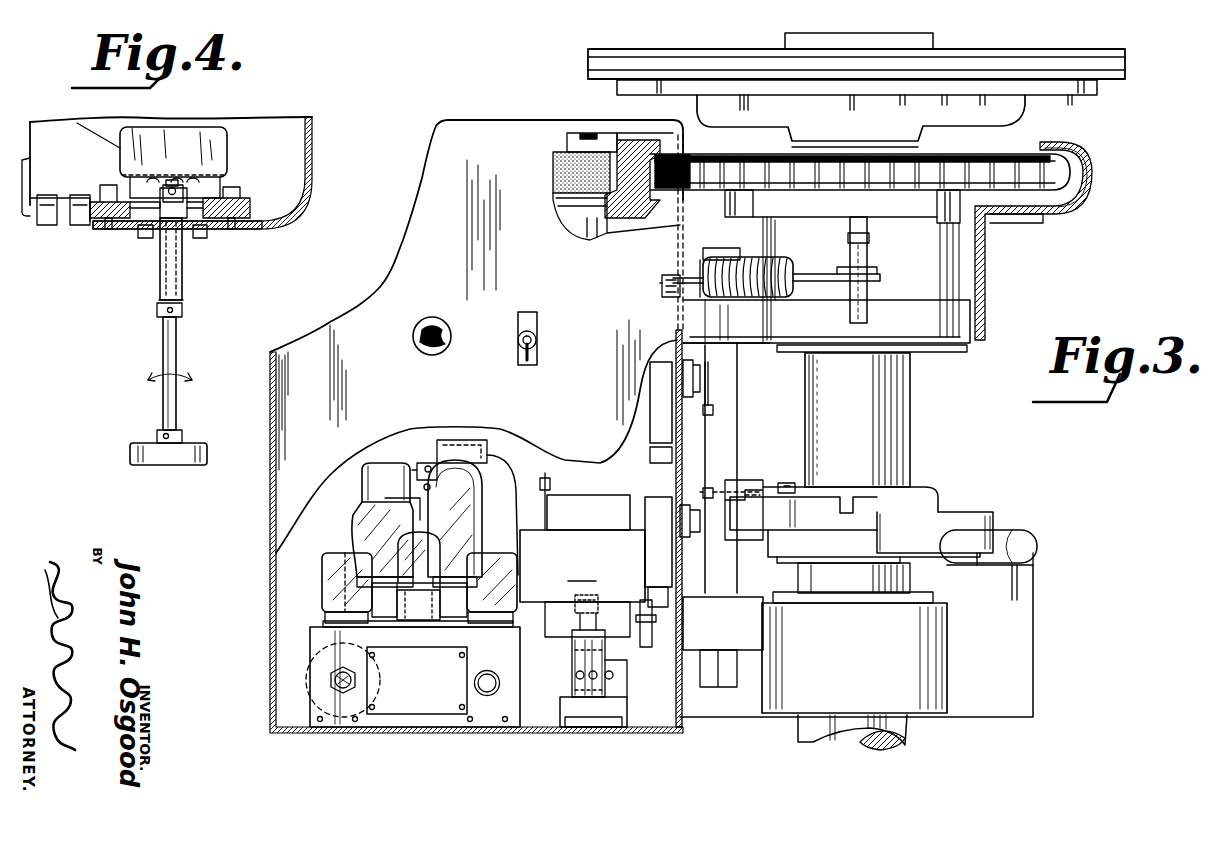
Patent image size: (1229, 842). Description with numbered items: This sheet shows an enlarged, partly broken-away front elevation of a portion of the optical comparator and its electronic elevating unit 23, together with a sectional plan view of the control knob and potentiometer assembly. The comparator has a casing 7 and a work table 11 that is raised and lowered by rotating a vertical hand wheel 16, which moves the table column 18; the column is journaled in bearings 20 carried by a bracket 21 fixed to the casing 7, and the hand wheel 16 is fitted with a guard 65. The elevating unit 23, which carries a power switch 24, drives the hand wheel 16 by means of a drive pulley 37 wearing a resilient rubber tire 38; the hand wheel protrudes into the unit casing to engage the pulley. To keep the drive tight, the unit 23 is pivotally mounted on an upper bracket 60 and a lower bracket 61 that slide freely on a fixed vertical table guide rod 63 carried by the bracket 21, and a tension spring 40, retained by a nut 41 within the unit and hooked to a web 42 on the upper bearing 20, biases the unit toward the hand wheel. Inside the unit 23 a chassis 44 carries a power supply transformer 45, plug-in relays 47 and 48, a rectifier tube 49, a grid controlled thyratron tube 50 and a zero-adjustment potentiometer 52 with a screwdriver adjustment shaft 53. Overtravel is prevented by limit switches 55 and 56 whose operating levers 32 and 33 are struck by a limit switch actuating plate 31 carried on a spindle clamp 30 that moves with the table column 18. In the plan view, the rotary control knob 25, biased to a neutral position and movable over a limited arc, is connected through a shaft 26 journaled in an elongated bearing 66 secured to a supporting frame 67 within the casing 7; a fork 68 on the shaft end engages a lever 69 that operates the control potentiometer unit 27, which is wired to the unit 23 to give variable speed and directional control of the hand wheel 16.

In FIG. 4, the casing 7 is at (312, 190).
In FIG. 3, the work table 11 is at (1062, 78).
In FIG. 3, the vertical hand wheel 16 is at (1032, 154).
In FIG. 3, the table column 18 is at (902, 448).
In FIG. 3, the bearings 20 is at (963, 296).
In FIG. 3, the bracket 21 is at (1023, 670).
In FIG. 3, the electronic elevating unit 23 is at (272, 525).
In FIG. 3, the power switch 24 is at (537, 343).
In FIG. 4, the rotary control knob 25 is at (130, 452).
In FIG. 4, the shaft 26 is at (178, 348).
In FIG. 4, the control potentiometer unit 27 is at (226, 153).
In FIG. 3, the spindle clamp 30 is at (940, 498).
In FIG. 3, the limit switch actuating plate 31 is at (706, 488).
In FIG. 3, the operating lever 32 is at (713, 408).
In FIG. 3, the operating lever 33 is at (708, 490).
In FIG. 3, the drive pulley 37 is at (628, 146).
In FIG. 3, the tire 38 is at (573, 152).
In FIG. 3, the tension spring 40 is at (770, 298).
In FIG. 3, the nut 41 is at (668, 273).
In FIG. 3, the web 42 is at (867, 255).
In FIG. 3, the chassis 44 is at (523, 715).
In FIG. 3, the power supply transformer 45 is at (588, 560).
In FIG. 3, the plug-in relay 47 is at (327, 592).
In FIG. 3, the plug-in relay 48 is at (507, 607).
In FIG. 3, the rectifier tube 49 is at (353, 517).
In FIG. 3, the grid controlled thyratron tube 50 is at (487, 508).
In FIG. 3, the zero-adjustment potentiometer 52 is at (333, 662).
In FIG. 3, the screwdriver adjustment shaft 53 is at (335, 688).
In FIG. 3, the limit switch 55 is at (663, 397).
In FIG. 3, the limit switch 56 is at (656, 507).
In FIG. 3, the upper bracket 60 is at (690, 262).
In FIG. 3, the lower bracket 61 is at (690, 585).
In FIG. 3, the vertical table guide rod 63 is at (739, 425).
In FIG. 3, the guard 65 is at (1090, 185).
In FIG. 4, the elongated bearing 66 is at (183, 265).
In FIG. 4, the supporting frame 67 is at (272, 229).
In FIG. 4, the fork 68 is at (183, 192).
In FIG. 4, the lever 69 is at (173, 188).